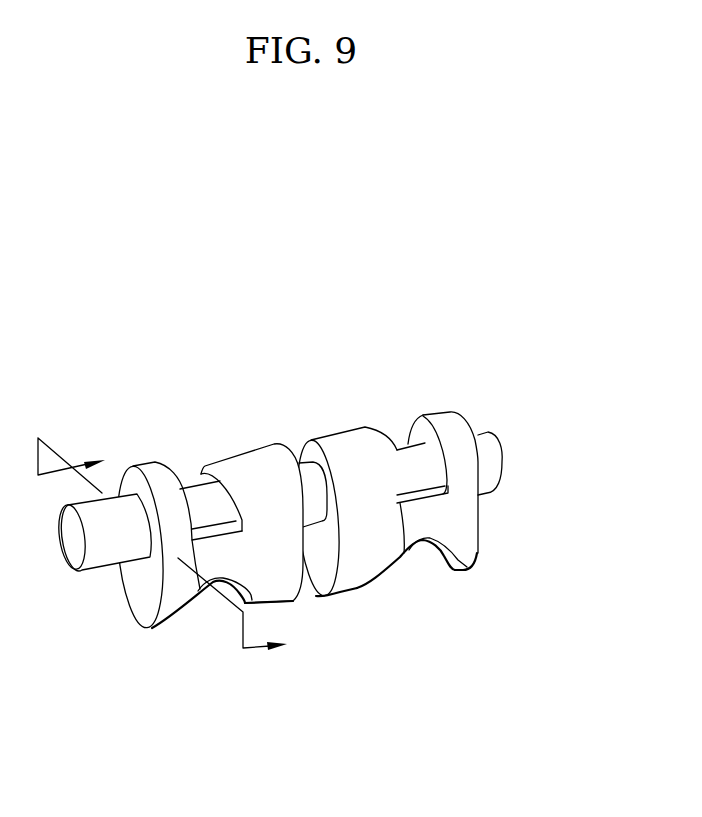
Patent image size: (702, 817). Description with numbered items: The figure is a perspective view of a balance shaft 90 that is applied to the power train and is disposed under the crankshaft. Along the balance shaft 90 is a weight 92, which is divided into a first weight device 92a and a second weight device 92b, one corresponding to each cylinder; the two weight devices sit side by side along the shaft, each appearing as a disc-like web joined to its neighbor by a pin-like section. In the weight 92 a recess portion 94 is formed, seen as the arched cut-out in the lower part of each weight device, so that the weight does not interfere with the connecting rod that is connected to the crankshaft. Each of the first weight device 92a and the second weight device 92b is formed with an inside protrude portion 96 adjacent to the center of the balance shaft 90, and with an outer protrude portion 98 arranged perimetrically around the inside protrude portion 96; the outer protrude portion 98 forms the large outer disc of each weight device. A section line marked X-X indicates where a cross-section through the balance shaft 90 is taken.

The balance shaft 90 is at (311, 575).
The weight 92 is at (290, 586).
The first weight device 92a is at (302, 601).
The second weight device 92b is at (365, 593).
The recess portion 94 is at (212, 585).
The inside protrude portion 96 is at (277, 597).
The outer protrude portion 98 is at (163, 629).